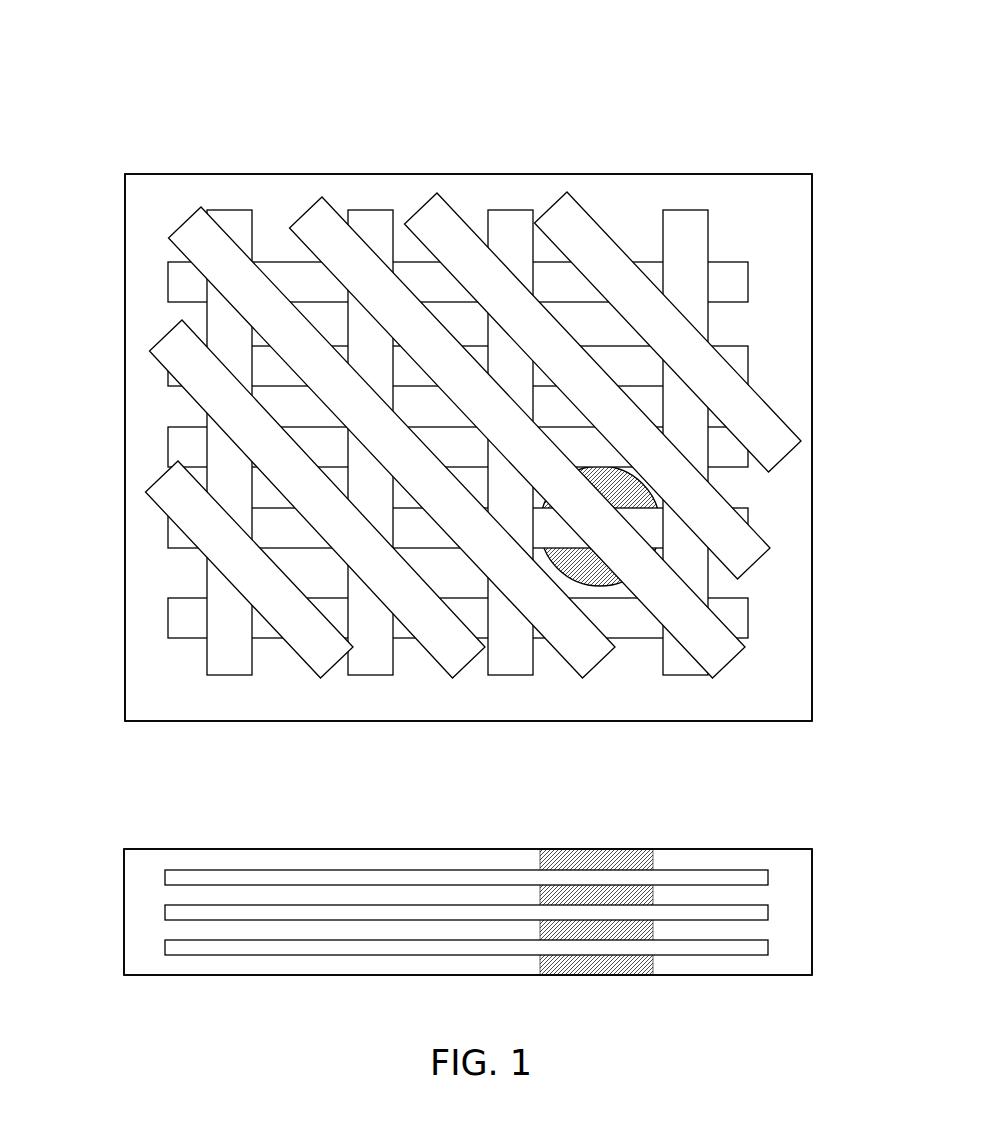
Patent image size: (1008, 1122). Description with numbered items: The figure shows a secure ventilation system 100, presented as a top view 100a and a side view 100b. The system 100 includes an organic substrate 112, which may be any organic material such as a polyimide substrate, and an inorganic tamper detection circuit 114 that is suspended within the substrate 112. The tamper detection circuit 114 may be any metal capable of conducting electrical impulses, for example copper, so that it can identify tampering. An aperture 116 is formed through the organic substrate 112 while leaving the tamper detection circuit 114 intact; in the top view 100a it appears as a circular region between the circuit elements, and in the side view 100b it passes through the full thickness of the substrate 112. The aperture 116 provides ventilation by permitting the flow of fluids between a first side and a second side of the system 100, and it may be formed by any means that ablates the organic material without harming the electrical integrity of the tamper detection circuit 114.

The secure ventilation system 100 is at (757, 38).
The top view 100a is at (158, 165).
The side view 100b is at (160, 818).
The organic substrate 112 is at (783, 225).
The inorganic tamper detection circuit 114 is at (705, 317).
The aperture 116 is at (601, 573).